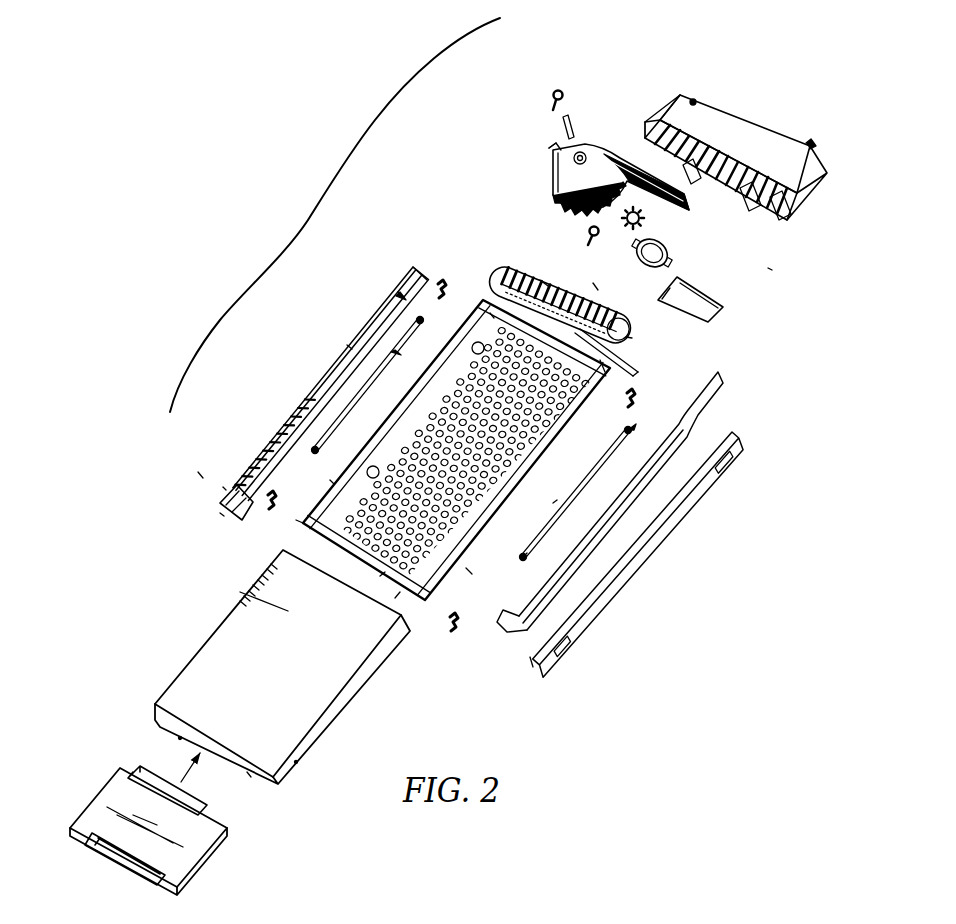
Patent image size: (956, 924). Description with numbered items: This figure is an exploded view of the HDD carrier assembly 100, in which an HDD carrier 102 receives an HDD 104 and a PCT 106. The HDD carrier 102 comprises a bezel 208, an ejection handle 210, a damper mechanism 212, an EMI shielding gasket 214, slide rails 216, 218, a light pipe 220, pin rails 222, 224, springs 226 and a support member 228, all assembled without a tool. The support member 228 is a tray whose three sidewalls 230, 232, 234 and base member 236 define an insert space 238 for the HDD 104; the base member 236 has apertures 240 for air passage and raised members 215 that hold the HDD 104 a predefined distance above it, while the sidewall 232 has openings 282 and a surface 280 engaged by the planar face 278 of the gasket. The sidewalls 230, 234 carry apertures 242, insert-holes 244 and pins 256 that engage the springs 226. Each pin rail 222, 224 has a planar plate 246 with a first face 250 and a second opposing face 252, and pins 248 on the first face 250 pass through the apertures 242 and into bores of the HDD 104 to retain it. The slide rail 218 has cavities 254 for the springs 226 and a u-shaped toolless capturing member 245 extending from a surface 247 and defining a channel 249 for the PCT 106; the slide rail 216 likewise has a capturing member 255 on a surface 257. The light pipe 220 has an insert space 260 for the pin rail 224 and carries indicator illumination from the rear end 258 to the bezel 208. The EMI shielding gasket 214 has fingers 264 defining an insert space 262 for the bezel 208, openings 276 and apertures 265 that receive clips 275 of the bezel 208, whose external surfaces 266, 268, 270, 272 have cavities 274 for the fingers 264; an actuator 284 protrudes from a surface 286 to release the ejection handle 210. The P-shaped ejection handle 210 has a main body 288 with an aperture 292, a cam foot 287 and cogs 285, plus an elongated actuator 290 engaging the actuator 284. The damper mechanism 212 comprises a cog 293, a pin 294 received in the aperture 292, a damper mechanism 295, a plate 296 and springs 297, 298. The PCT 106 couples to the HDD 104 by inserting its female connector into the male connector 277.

The HDD carrier assembly 100 is at (222, 238).
The HDD carrier 102 is at (314, 201).
The HDD 104 is at (262, 674).
The PCT 106 is at (152, 830).
The bezel 208 is at (613, 391).
The ejection handle 210 is at (570, 167).
The damper mechanism 212 is at (769, 269).
The EMI shielding gasket 214 is at (408, 455).
The raised members 215 is at (373, 466).
The slide rail 216 is at (640, 567).
The slide rail 218 is at (407, 422).
The light pipe 220 is at (643, 513).
The pin rail 222 is at (380, 330).
The pin rail 224 is at (622, 513).
The springs 226 is at (318, 372).
The support member 228 is at (441, 481).
The sidewall 230 is at (294, 498).
The sidewall 232 is at (602, 372).
The sidewall 234 is at (470, 566).
The base member 236 is at (396, 598).
The insert space 238 is at (296, 556).
The apertures 240 is at (382, 575).
The aperture 242 is at (283, 447).
The insert-hole 244 is at (413, 270).
The u-shaped toolless capturing member 245 is at (224, 488).
The planar plate 246 is at (555, 503).
The surface 247 is at (332, 481).
The pin 248 is at (640, 420).
The channel 249 is at (221, 513).
The first face 250 is at (526, 553).
The second opposing face 252 is at (350, 348).
The cavities 254 is at (400, 292).
The u-shaped toolless capturing member 255 is at (535, 672).
The pin 256 is at (298, 523).
The surface 257 is at (550, 636).
The rear end 258 is at (199, 473).
The insert space 260 is at (641, 489).
The insert space 262 is at (568, 286).
The fingers 264 is at (597, 281).
The apertures 265 is at (636, 375).
The external surface 266 is at (763, 140).
The external surface 268 is at (812, 178).
The external surface 270 is at (786, 219).
The external surface 272 is at (668, 116).
The cavities 274 is at (659, 118).
The clips 275 is at (697, 183).
The openings 276 is at (632, 337).
The male connector 277 is at (249, 774).
The planar face 278 is at (600, 360).
The surface 280 is at (492, 315).
The openings 282 is at (541, 280).
The actuator 284 is at (814, 144).
The cogs 285 is at (570, 219).
The surface 286 is at (725, 112).
The cam foot 287 is at (547, 141).
The main body 288 is at (581, 153).
The elongated actuator 290 is at (683, 95).
The aperture 292 is at (555, 166).
The cog 293 is at (641, 222).
The pin 294 is at (573, 128).
The damper mechanism 295 is at (668, 250).
The plate 296 is at (705, 293).
The spring 297 is at (589, 236).
The spring 298 is at (554, 97).